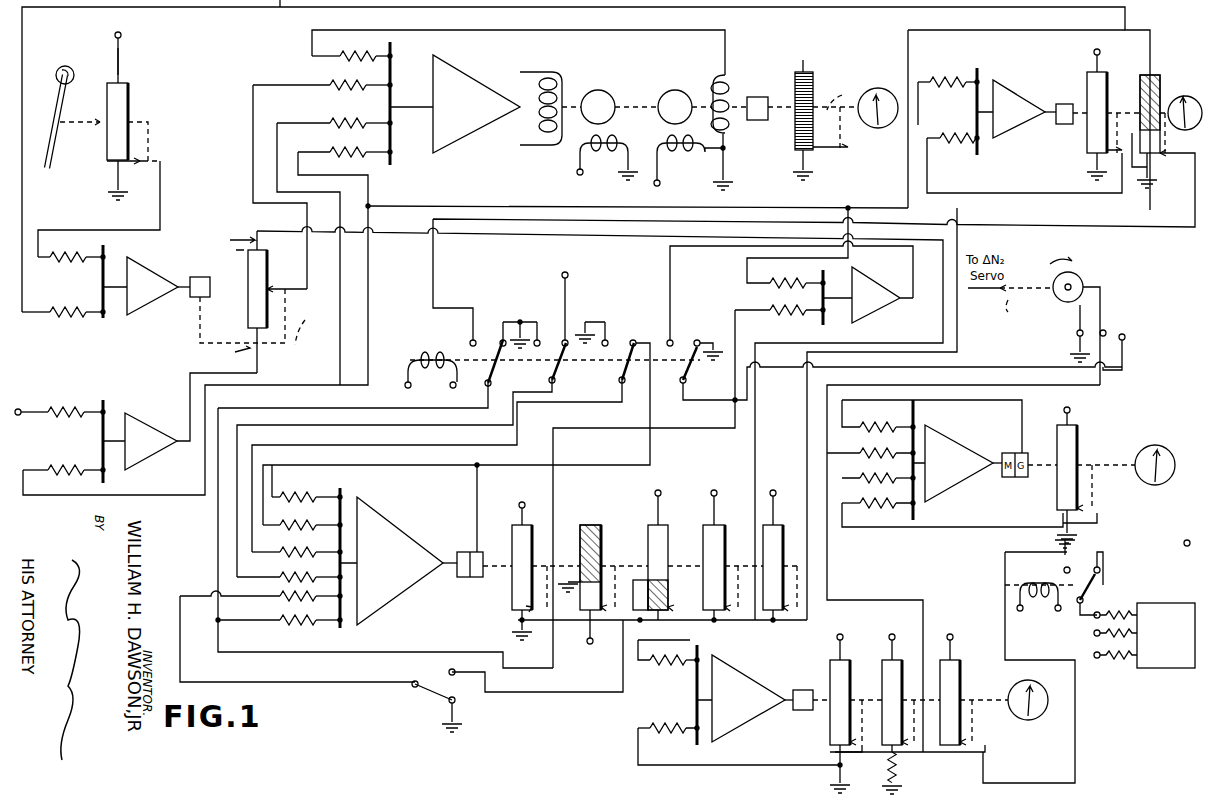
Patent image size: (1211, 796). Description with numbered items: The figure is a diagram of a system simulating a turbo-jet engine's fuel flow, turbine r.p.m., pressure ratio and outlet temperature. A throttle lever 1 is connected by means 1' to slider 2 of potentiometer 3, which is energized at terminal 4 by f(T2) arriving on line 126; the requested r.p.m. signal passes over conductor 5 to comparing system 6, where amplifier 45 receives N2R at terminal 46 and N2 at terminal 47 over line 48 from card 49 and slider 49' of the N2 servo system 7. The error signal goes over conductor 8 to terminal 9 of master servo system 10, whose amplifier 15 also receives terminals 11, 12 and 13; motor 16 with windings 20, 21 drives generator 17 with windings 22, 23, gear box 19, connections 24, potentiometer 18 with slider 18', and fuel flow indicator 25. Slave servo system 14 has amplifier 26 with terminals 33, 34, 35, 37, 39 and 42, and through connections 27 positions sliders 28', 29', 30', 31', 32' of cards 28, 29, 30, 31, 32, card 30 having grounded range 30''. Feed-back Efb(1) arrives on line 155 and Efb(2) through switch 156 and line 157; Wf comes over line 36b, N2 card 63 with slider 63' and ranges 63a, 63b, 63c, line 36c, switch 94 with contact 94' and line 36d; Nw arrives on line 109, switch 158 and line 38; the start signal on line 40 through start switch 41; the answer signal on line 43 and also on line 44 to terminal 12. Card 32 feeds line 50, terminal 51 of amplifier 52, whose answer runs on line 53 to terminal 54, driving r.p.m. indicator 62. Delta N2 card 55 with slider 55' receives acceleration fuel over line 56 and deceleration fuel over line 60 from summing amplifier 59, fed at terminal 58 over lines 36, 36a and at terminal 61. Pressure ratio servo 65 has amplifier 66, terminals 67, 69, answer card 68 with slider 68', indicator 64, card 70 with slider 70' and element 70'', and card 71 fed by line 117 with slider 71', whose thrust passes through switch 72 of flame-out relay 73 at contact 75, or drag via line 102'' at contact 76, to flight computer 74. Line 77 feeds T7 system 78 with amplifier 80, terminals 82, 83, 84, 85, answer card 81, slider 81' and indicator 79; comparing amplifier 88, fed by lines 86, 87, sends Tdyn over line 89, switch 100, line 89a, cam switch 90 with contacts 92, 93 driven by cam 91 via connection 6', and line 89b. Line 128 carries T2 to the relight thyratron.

The throttle lever 1 is at (59, 106).
The connecting means 1' is at (110, 129).
The slider contact 2 is at (131, 166).
The potentiometer 3 is at (107, 140).
The upper terminal 4 is at (114, 80).
The conductor 5 is at (130, 230).
The comparing system 6 is at (140, 281).
The connection 6' is at (265, 329).
The N2 servo system 7 is at (1056, 98).
The conductor 8 is at (253, 125).
The input terminal 9 is at (390, 85).
The servo system 10 is at (656, 58).
The terminal 11 is at (390, 56).
The terminal 12 is at (390, 123).
The terminal 13 is at (390, 152).
The slave servo system 14 is at (455, 534).
The servo amplifier 15 is at (476, 62).
The motor 16 is at (593, 91).
The feed-back generator 17 is at (690, 87).
The potentiometer 18 is at (821, 114).
The slider contact 18' is at (830, 144).
The reduction gear box 19 is at (760, 98).
The control phase winding 20 is at (540, 90).
The phase winding 21 is at (598, 168).
The reference phase winding 22 is at (681, 168).
The phase winding 23 is at (730, 85).
The mechanical connections 24 is at (844, 115).
The indicator 25 is at (898, 84).
The servo summing amplifier 26 is at (381, 512).
The mechanical connections 27 is at (483, 577).
The potentiometer 28 is at (511, 561).
The slider 28' is at (538, 630).
The potentiometer 29 is at (588, 577).
The slider 29' is at (614, 626).
The potentiometer 30 is at (647, 548).
The slider 30' is at (689, 596).
The grounded range 30'' is at (633, 564).
The potentiometer 31 is at (708, 548).
The slider 31' is at (737, 627).
The potentiometer 32 is at (781, 548).
The slider 32' is at (799, 625).
The terminal 33 is at (342, 498).
The terminal 34 is at (340, 524).
The terminal 35 is at (340, 552).
The line 36 is at (499, 206).
The line 36a is at (170, 487).
The line 36b is at (1022, 36).
The line 36c is at (442, 262).
The line 36d is at (458, 426).
The terminal 37 is at (340, 577).
The line 38 is at (342, 408).
The terminal 39 is at (340, 596).
The line 40 is at (192, 597).
The start switch 41 is at (434, 678).
The terminal 42 is at (342, 622).
The line 43 is at (320, 643).
The line 44 is at (276, 124).
The servo amplifier 45 is at (152, 308).
The input terminal 46 is at (108, 260).
The terminal 47 is at (106, 318).
The line 48 is at (884, 2).
The card 49 is at (1085, 108).
The slider 49' is at (1109, 170).
The line 50 is at (918, 102).
The input terminal 51 is at (977, 82).
The servo amplifier 52 is at (1000, 93).
The line 53 is at (960, 193).
The input terminal 54 is at (977, 138).
The Delta N2 card 55 is at (245, 302).
The slider 55' is at (287, 276).
The line 56 is at (292, 216).
The input terminal 58 is at (108, 470).
The summing amplifier 59 is at (142, 442).
The line 60 is at (188, 372).
The terminal 61 is at (105, 412).
The r.p.m. indicator 62 is at (1196, 96).
The N2 card 63 is at (1165, 113).
The slider 63' is at (1177, 160).
The grounded range 63a is at (1152, 161).
The limited range 63b is at (1130, 167).
The conducting portion 63c is at (1136, 78).
The indicator 64 is at (1040, 684).
The servo system 65 is at (784, 673).
The servo amplifier 66 is at (750, 728).
The terminal 67 is at (690, 666).
The answer card 68 is at (828, 706).
The slider 68' is at (857, 761).
The input terminal 69 is at (688, 732).
The servo card 70 is at (880, 704).
The slider 70' is at (920, 755).
The resistance 70'' is at (916, 782).
The card 71 is at (956, 683).
The slider 71' is at (908, 761).
The switch 72 is at (1094, 566).
The flame-out relay 73 is at (448, 378).
The flight computer 74 is at (1178, 603).
The contact 75 is at (1060, 608).
The contact 76 is at (1103, 588).
The line 77 is at (836, 557).
The T7 computing system 78 is at (978, 437).
The indicator 79 is at (1178, 444).
The servo amplifier 80 is at (958, 488).
The answer card 81 is at (1078, 468).
The slider 81' is at (1096, 495).
The terminal 82 is at (907, 464).
The terminal 83 is at (911, 498).
The terminal 84 is at (907, 435).
The terminal 85 is at (912, 410).
The line 86 is at (745, 272).
The line 87 is at (740, 337).
The comparing amplifier 88 is at (862, 278).
The line 89 is at (670, 283).
The line 89a is at (690, 396).
The line 89b is at (861, 386).
The cam switch 90 is at (1102, 288).
The cam 91 is at (1057, 299).
The contact 92 is at (1086, 309).
The contact 93 is at (1120, 310).
The flame-out relay switch 94 is at (481, 363).
The contact 94' is at (488, 318).
The flame-out relay switch 100 is at (682, 378).
The line 102'' is at (1105, 540).
The line 109 is at (570, 300).
The line 117 is at (955, 644).
The line 126 is at (120, 51).
The line 128 is at (895, 640).
The line 155 is at (307, 465).
The flame-out relay switch 156 is at (626, 368).
The line 157 is at (366, 445).
The flame switch 158 is at (548, 374).